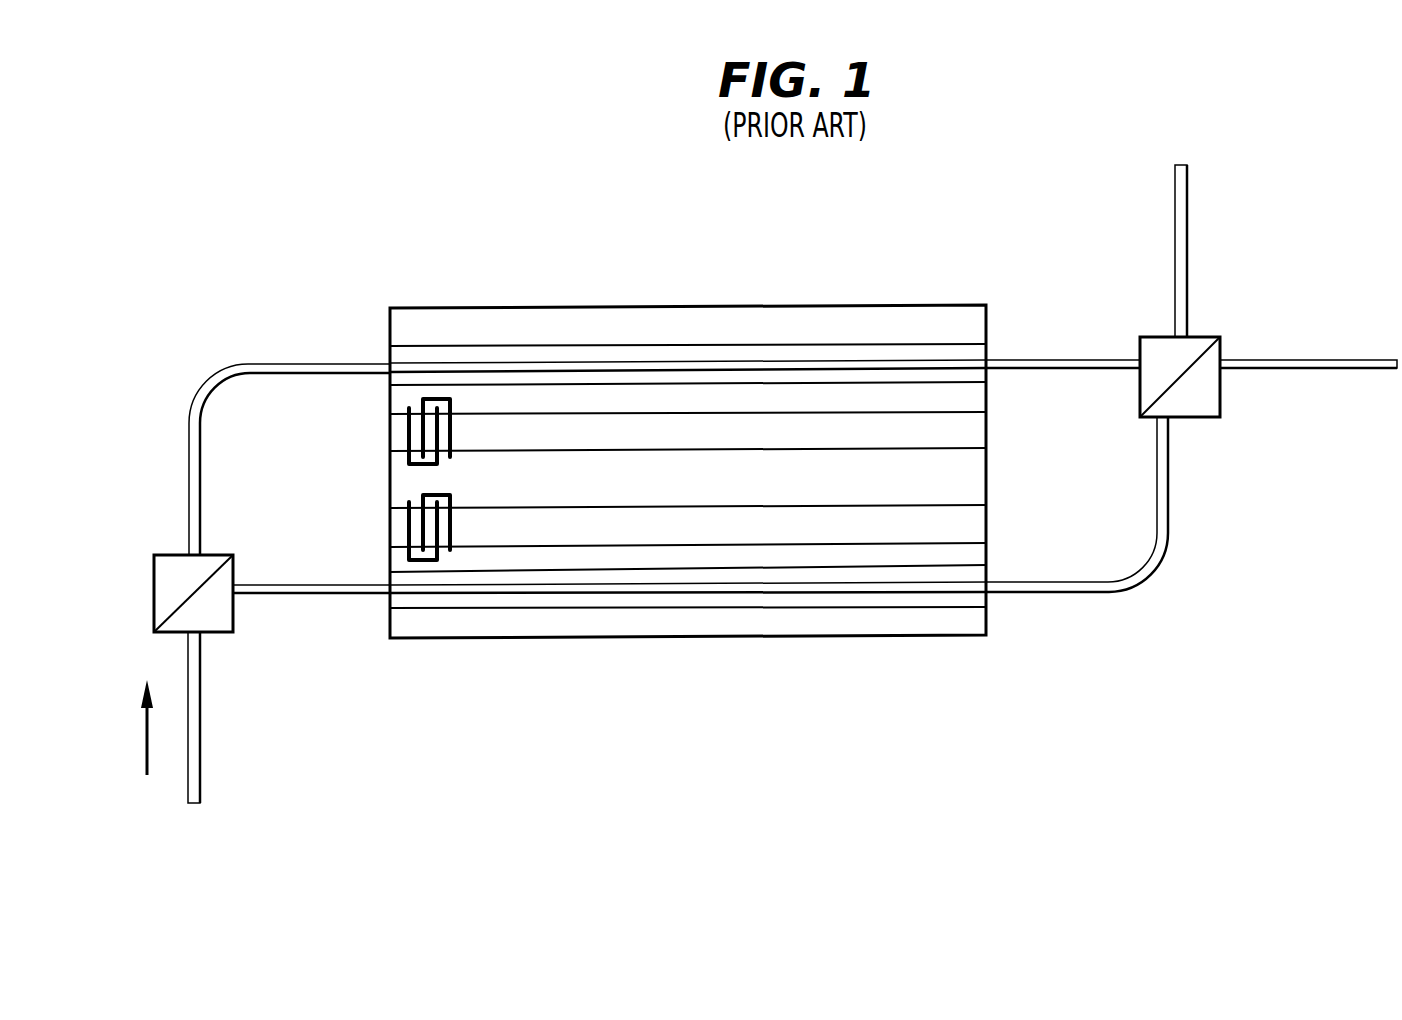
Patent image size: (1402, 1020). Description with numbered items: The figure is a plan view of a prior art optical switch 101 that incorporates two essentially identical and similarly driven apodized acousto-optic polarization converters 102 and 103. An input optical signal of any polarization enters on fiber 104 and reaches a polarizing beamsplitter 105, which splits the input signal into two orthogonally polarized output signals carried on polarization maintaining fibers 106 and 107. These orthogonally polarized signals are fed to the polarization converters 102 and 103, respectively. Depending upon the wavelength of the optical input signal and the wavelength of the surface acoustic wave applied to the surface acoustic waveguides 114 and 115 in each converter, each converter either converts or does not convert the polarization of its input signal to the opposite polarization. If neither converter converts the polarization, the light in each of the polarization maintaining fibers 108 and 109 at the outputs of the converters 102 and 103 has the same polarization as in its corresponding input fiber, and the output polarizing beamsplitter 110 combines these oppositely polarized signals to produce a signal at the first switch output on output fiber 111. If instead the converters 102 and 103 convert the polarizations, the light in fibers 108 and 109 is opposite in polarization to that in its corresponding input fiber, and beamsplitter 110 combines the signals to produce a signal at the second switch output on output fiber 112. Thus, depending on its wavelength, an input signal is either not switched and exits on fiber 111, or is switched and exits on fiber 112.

The optical switch 101 is at (550, 178).
The acousto-optic polarization converter 102 is at (680, 638).
The acousto-optic polarization converter 103 is at (626, 307).
The fiber 104 is at (201, 688).
The polarizing beamsplitter 105 is at (150, 589).
The polarization maintaining fiber 106 is at (277, 584).
The polarization maintaining fiber 107 is at (315, 374).
The polarization maintaining fiber 108 is at (1152, 579).
The polarization maintaining fiber 109 is at (1050, 360).
The output polarizing beamsplitter 110 is at (1205, 389).
The output fiber 111 is at (1303, 360).
The output fiber 112 is at (1180, 265).
The surface acoustic waveguide 114 is at (688, 520).
The surface acoustic waveguide 115 is at (757, 442).